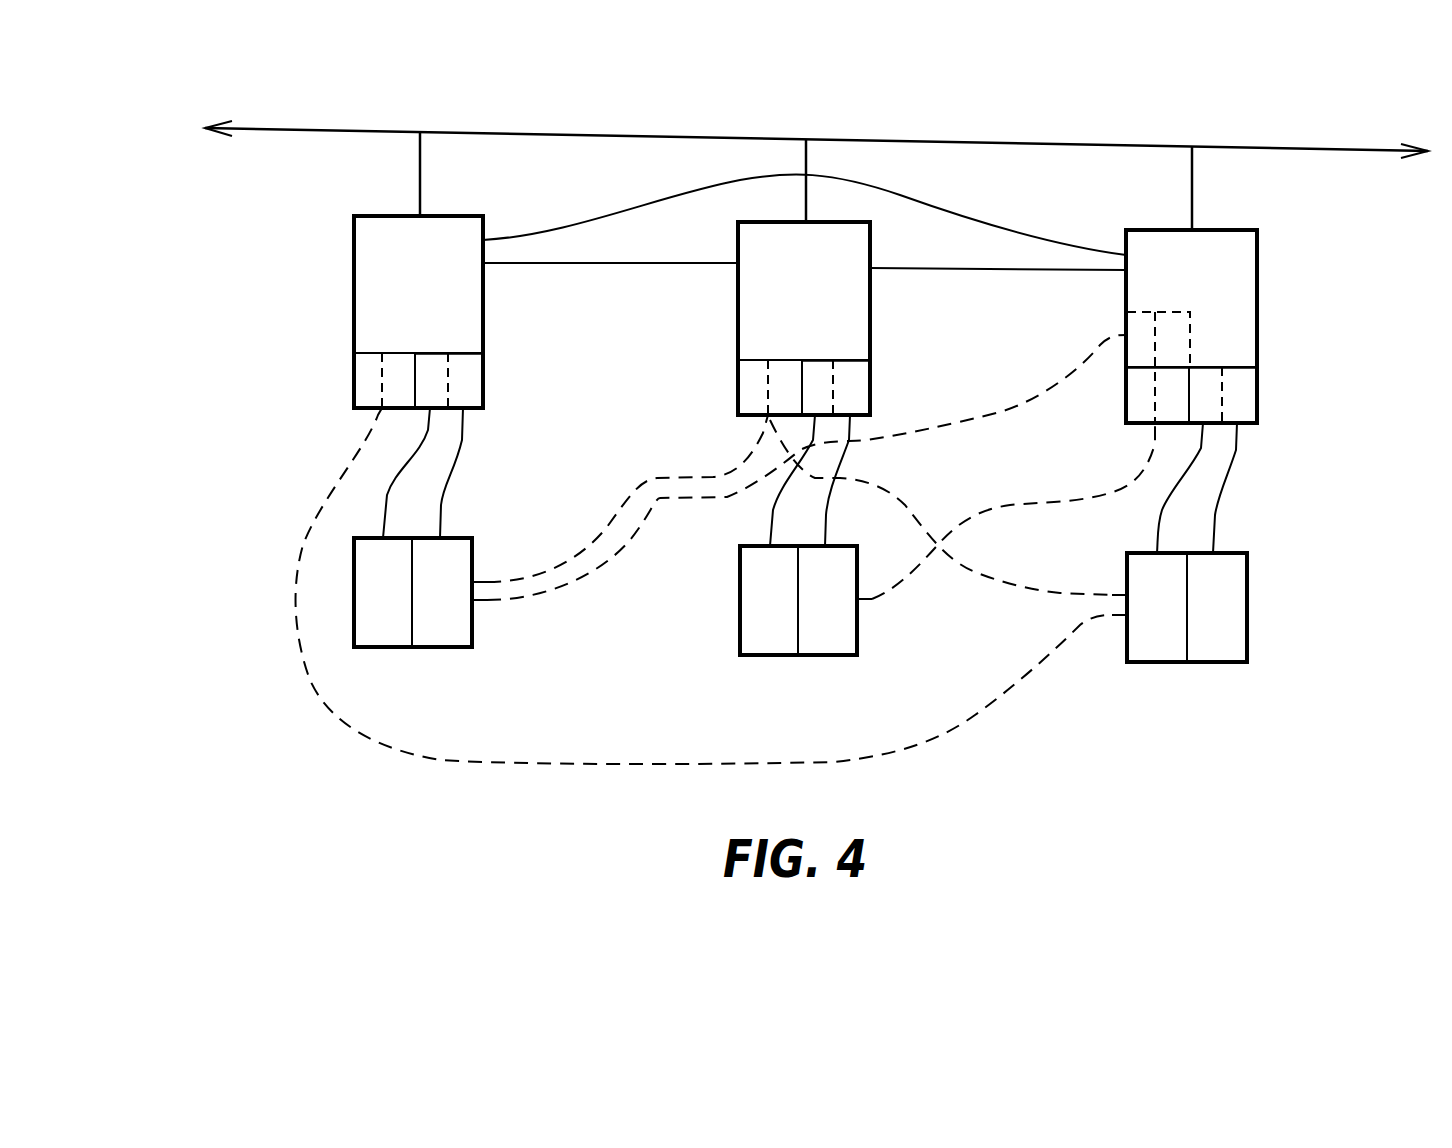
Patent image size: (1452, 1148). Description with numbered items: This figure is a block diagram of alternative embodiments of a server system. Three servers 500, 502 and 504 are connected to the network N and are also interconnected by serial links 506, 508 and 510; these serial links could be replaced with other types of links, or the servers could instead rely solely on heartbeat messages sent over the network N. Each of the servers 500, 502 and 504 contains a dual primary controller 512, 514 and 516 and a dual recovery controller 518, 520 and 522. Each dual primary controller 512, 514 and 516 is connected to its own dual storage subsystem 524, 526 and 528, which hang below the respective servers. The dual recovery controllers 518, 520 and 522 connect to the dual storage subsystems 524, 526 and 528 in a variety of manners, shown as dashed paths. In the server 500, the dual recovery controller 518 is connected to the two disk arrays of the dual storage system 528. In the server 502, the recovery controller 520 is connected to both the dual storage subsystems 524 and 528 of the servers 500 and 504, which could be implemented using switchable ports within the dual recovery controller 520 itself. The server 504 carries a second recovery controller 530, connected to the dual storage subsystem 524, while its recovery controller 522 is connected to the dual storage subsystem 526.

The network N is at (519, 132).
The server 500 is at (468, 256).
The server 502 is at (853, 261).
The server 504 is at (1241, 269).
The serial link 506 is at (650, 214).
The serial link 508 is at (641, 264).
The serial link 510 is at (994, 271).
The dual primary controller 512 is at (452, 353).
The dual primary controller 514 is at (837, 362).
The dual primary controller 516 is at (1223, 368).
The dual recovery controller 518 is at (358, 375).
The dual recovery controller 520 is at (745, 384).
The dual recovery controller 522 is at (1126, 392).
The dual storage subsystem 524 is at (455, 647).
The dual storage subsystem 526 is at (840, 655).
The dual storage subsystem 528 is at (1230, 662).
The second recovery controller 530 is at (1153, 312).